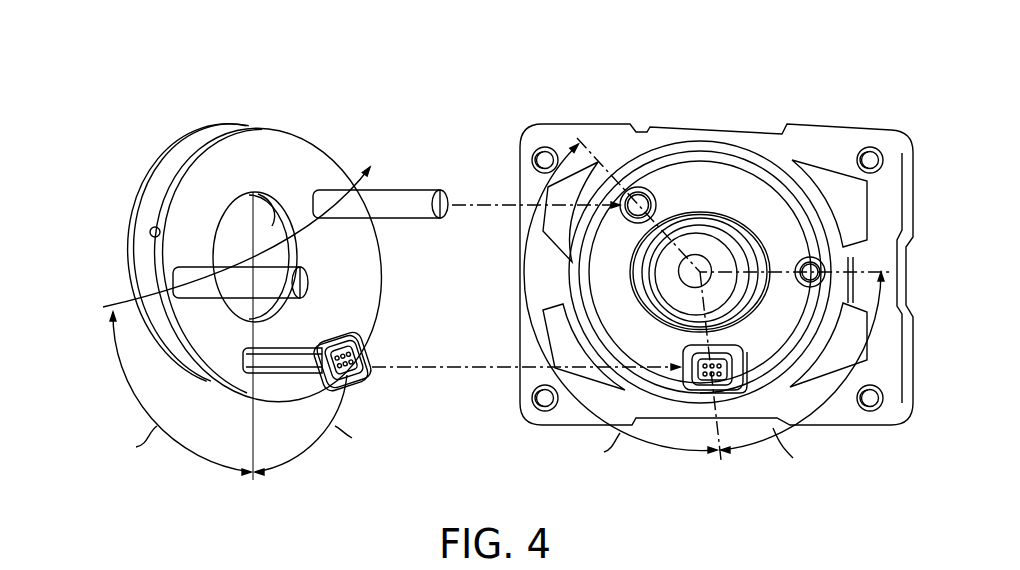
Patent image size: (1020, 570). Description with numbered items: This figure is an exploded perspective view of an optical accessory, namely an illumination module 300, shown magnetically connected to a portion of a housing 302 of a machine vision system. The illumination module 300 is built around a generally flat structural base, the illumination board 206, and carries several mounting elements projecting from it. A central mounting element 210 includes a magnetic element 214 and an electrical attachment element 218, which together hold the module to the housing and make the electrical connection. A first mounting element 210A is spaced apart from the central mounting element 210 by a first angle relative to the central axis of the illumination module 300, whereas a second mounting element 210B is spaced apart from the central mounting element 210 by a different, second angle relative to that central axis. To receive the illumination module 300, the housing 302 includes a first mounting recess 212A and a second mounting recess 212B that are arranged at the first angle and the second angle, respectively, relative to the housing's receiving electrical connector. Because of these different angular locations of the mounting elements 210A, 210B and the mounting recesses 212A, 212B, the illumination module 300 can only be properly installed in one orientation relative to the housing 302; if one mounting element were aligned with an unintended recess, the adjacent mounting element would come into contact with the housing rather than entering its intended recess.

The illumination module 300 is at (307, 118).
The illumination board 206 is at (250, 124).
The mounting element 210 is at (288, 368).
The first mounting element 210A is at (183, 271).
The second mounting element 210B is at (412, 191).
The magnetic element 214 is at (358, 377).
The electrical attachment element 218 is at (374, 357).
The housing 302 is at (745, 130).
The first mounting recess 212A is at (812, 288).
The second mounting recess 212B is at (638, 187).